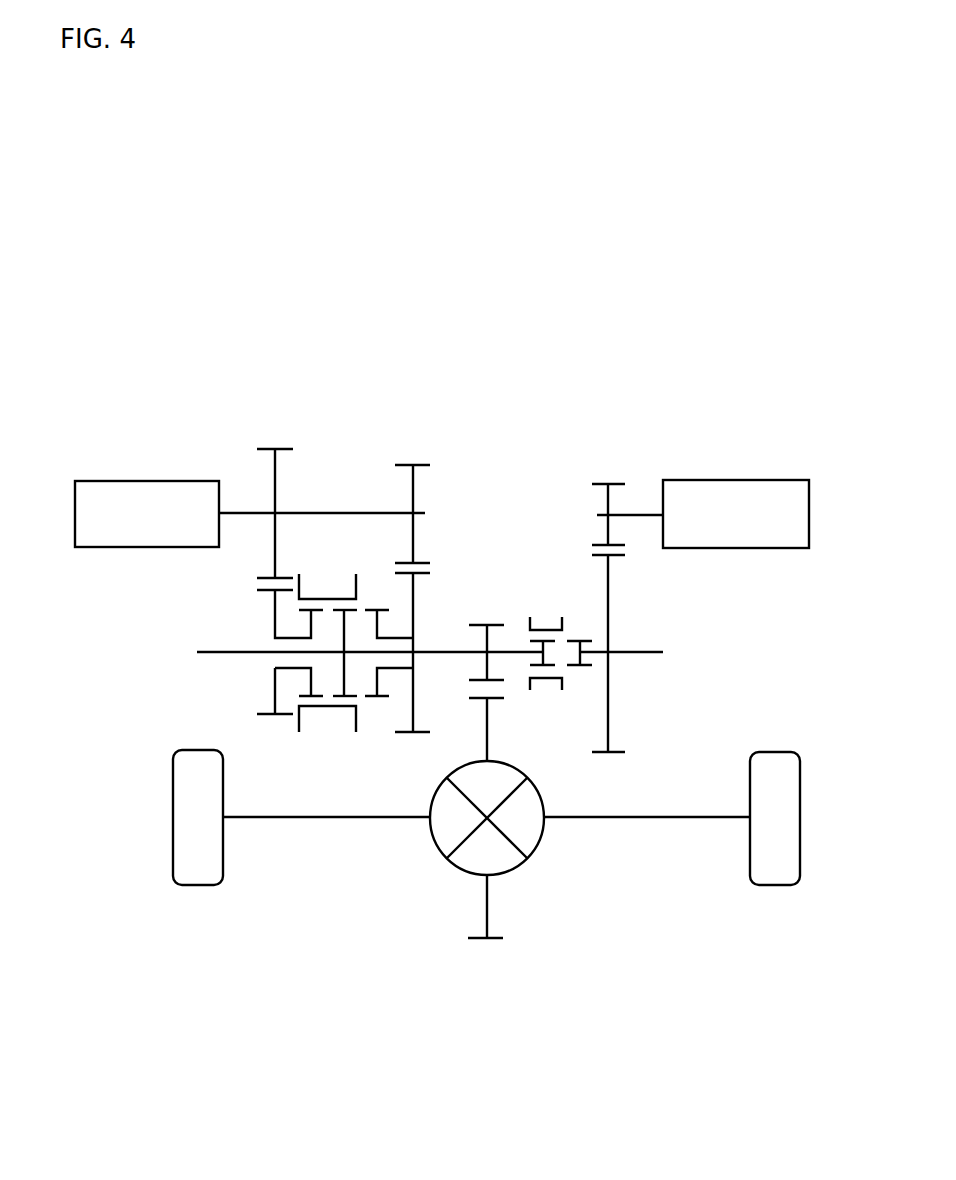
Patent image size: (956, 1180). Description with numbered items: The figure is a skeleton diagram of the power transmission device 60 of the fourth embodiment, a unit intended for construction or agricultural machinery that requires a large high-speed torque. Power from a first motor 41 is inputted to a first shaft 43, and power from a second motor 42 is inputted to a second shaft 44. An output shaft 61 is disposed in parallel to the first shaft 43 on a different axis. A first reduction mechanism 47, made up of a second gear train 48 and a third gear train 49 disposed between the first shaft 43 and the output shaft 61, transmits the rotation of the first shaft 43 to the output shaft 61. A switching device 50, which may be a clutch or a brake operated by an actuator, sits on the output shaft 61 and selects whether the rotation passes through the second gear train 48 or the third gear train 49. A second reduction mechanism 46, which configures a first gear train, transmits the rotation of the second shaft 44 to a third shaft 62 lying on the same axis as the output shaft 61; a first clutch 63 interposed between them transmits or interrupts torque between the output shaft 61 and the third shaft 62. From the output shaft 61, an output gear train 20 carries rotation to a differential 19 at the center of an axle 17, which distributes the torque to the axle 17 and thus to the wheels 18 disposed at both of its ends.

The axle 17 is at (348, 820).
The wheels 18 is at (200, 872).
The differential 19 is at (528, 834).
The output gear train 20 is at (493, 957).
The first motor 41 is at (150, 493).
The second motor 42 is at (747, 493).
The first shaft 43 is at (250, 512).
The second shaft 44 is at (628, 512).
The second reduction mechanism 46 is at (616, 475).
The first reduction mechanism 47 is at (272, 353).
The second gear train 48 is at (422, 433).
The third gear train 49 is at (287, 433).
The switching device 50 is at (335, 722).
The power transmission device 60 is at (664, 343).
The output shaft 61 is at (213, 650).
The third shaft 62 is at (650, 652).
The first clutch 63 is at (551, 612).